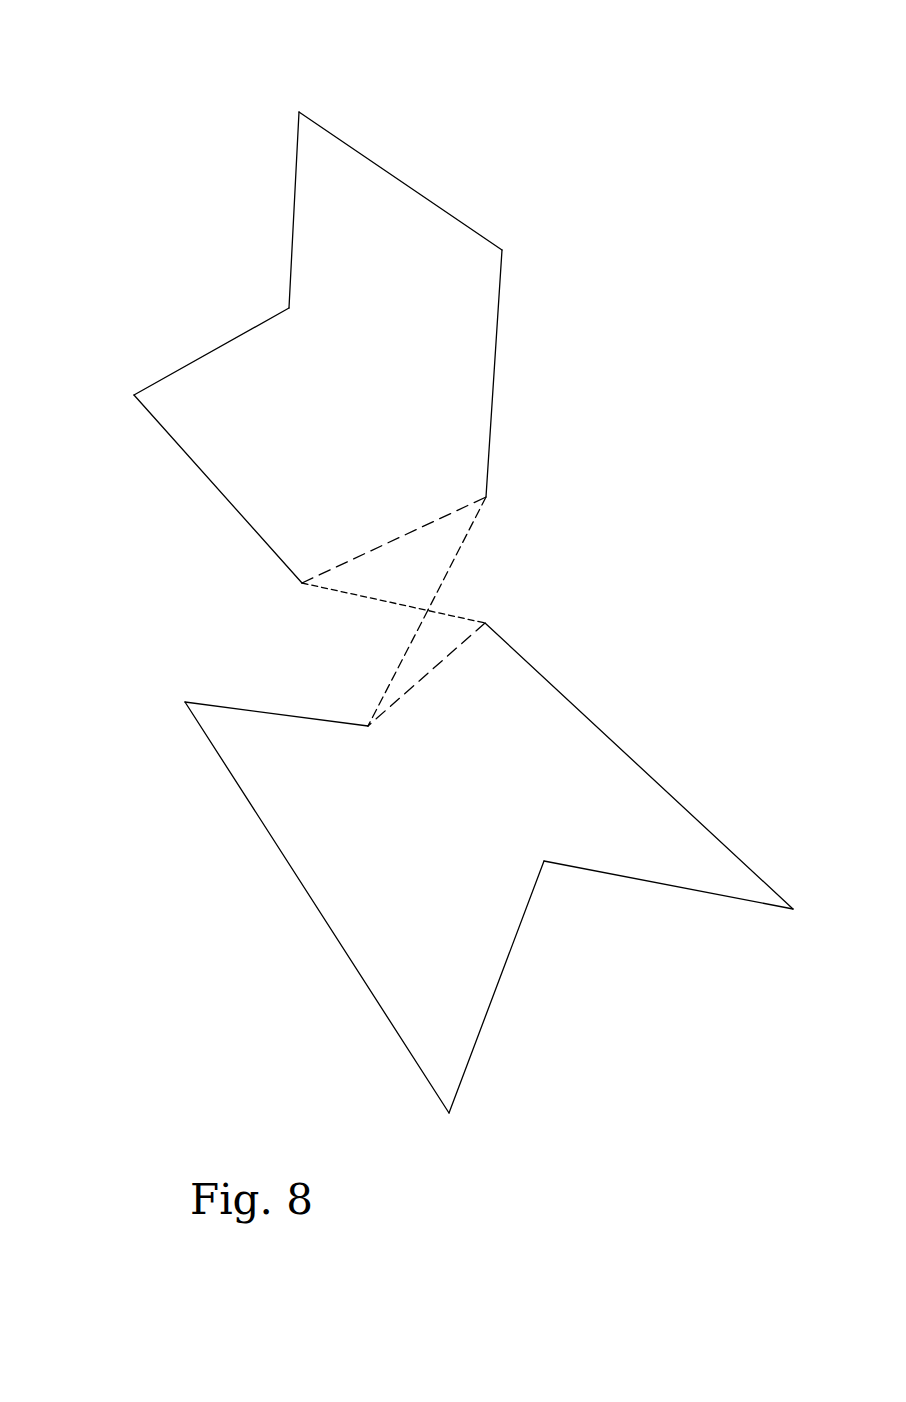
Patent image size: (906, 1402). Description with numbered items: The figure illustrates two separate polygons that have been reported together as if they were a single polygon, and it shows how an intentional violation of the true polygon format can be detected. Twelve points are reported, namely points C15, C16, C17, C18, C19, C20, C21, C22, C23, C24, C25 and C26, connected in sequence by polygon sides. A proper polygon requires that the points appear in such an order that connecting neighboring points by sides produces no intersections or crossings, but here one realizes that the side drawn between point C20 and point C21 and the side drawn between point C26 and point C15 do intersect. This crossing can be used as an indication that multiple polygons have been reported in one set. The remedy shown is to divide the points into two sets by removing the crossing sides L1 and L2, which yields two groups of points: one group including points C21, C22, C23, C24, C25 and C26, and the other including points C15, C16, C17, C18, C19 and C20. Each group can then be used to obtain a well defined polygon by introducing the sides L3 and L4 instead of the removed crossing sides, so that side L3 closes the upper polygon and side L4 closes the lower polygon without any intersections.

The point C15 is at (485, 623).
The point C16 is at (793, 909).
The point C17 is at (544, 861).
The point C18 is at (449, 1113).
The point C19 is at (185, 702).
The point C20 is at (368, 726).
The point C21 is at (486, 497).
The point C22 is at (502, 250).
The point C23 is at (299, 112).
The point C24 is at (289, 308).
The point C25 is at (134, 395).
The point C26 is at (302, 583).
The crossing side L1 is at (400, 665).
The crossing side L2 is at (456, 553).
The side L3 is at (391, 540).
The side L4 is at (425, 677).